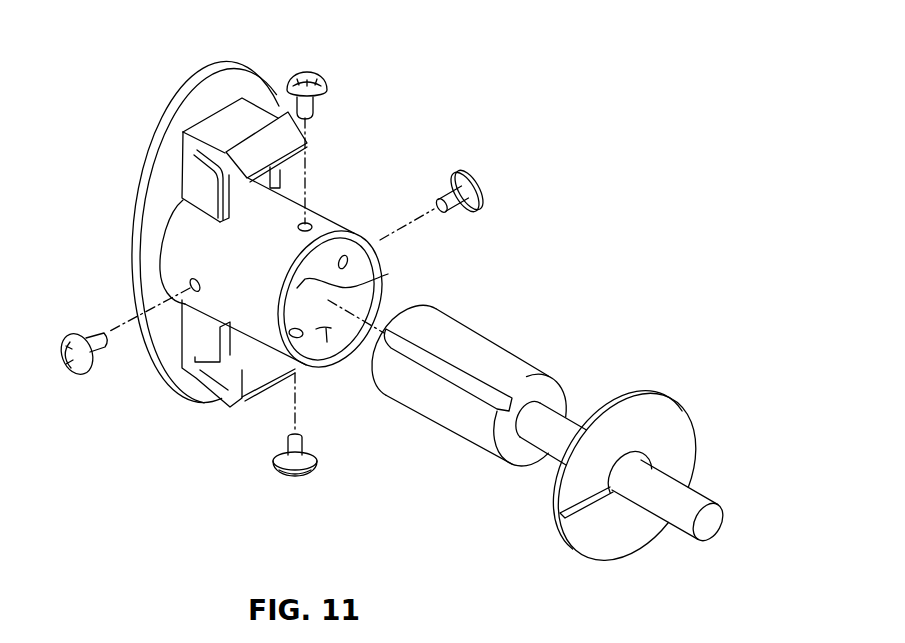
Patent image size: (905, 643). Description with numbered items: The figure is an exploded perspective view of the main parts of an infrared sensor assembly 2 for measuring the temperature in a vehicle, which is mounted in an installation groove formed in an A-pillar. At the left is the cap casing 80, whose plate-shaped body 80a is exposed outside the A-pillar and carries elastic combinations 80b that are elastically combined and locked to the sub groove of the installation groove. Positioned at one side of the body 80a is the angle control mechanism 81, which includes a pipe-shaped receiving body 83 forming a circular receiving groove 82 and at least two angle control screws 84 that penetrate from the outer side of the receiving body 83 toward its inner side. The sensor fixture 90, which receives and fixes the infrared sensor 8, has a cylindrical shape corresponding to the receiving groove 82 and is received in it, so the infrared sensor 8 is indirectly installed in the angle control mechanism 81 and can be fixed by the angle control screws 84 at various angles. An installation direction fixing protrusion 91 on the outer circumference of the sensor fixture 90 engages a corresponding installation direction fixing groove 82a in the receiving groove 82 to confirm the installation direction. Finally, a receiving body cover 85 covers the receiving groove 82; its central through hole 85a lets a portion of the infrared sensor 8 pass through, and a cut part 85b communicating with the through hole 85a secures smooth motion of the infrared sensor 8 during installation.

The infrared sensor assembly 2 is at (519, 158).
The infrared sensor 8 is at (683, 520).
The cap casing 80 is at (118, 146).
The body 80a is at (168, 170).
The combinations 80b is at (241, 117).
The angle control mechanism 81 is at (268, 547).
The receiving groove 82 is at (327, 340).
The installation direction fixing groove 82a is at (388, 274).
The receiving body 83 is at (263, 310).
The angle control screws 84 is at (294, 480).
The receiving body cover 85 is at (633, 420).
The through hole 85a is at (618, 500).
The cut part 85b is at (585, 513).
The sensor fixture 90 is at (483, 348).
The installation direction fixing protrusion 91 is at (455, 375).